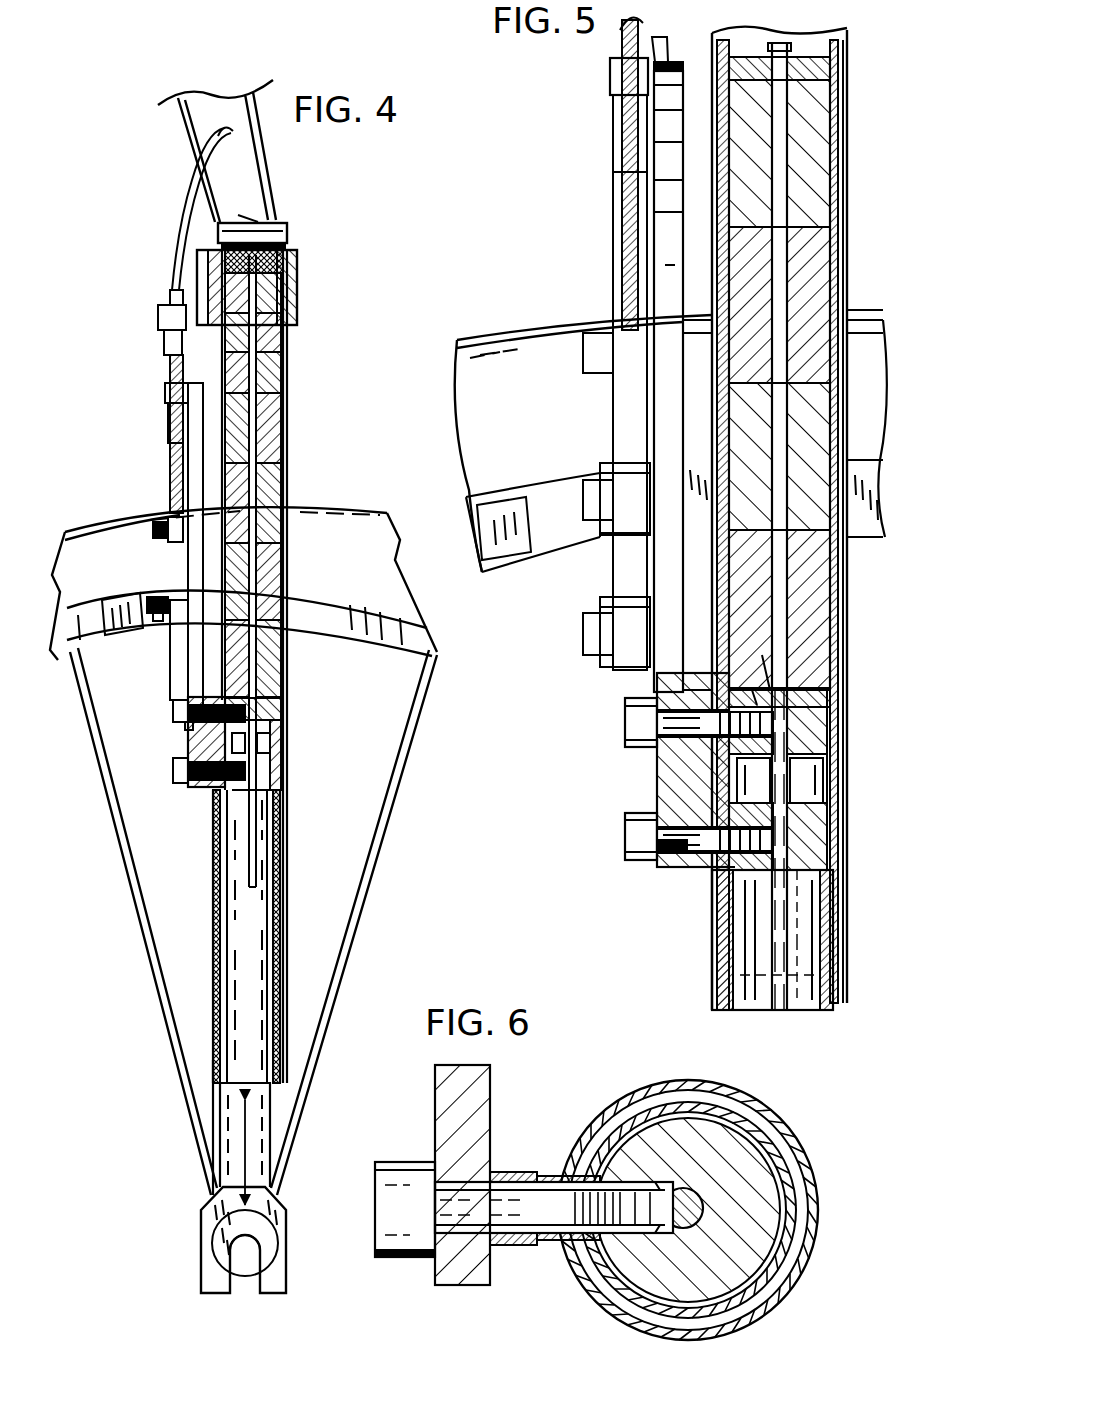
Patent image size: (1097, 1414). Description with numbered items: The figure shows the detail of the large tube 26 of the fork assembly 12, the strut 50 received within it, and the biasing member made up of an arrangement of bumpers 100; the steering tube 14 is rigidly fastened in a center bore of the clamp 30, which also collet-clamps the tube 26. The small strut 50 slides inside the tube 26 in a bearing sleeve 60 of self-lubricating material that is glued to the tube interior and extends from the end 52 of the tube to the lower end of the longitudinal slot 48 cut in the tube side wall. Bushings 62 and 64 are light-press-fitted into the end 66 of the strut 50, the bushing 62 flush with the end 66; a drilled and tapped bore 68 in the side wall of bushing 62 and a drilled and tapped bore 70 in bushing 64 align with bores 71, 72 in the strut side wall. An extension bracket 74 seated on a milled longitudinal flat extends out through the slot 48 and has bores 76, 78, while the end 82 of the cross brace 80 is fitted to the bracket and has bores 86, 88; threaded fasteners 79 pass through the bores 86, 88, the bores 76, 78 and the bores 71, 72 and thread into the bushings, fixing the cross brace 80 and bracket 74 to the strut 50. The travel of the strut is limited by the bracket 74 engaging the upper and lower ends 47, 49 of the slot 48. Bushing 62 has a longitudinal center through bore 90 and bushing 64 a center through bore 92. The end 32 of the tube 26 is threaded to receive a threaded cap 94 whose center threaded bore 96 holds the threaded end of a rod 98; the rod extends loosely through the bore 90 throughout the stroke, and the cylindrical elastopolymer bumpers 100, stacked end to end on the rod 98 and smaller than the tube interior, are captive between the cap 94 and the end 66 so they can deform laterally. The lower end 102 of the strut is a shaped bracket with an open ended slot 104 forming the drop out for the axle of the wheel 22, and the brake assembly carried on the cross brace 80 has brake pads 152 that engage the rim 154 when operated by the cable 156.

In FIG. 4, the fork assembly 12 is at (133, 228).
In FIG. 4, the steering tube 14 is at (180, 142).
In FIG. 4, the wheel 22 is at (88, 532).
In FIG. 5, the wheel 22 is at (505, 338).
In FIG. 4, the large tube 26 is at (283, 900).
In FIG. 5, the large tube 26 is at (843, 915).
In FIG. 6, the large tube 26 is at (773, 1117).
In FIG. 4, the clamp 30 is at (297, 300).
In FIG. 4, the end of the tube 32 is at (287, 243).
In FIG. 5, the upper end of the slot 47 is at (717, 581).
In FIG. 4, the longitudinal slot 48 is at (215, 797).
In FIG. 5, the longitudinal slot 48 is at (715, 898).
In FIG. 6, the longitudinal slot 48 is at (553, 1248).
In FIG. 4, the lower end of the slot 49 is at (217, 833).
In FIG. 5, the lower end of the slot 49 is at (715, 955).
In FIG. 4, the strut 50 is at (272, 1110).
In FIG. 5, the strut 50 is at (728, 923).
In FIG. 6, the strut 50 is at (757, 1275).
In FIG. 4, the end of the tube 52 is at (213, 1068).
In FIG. 4, the bearing sleeve 60 is at (280, 960).
In FIG. 5, the bearing sleeve 60 is at (840, 985).
In FIG. 6, the bearing sleeve 60 is at (797, 1192).
In FIG. 4, the bushing 62 is at (281, 714).
In FIG. 5, the bushing 62 is at (818, 722).
In FIG. 6, the bushing 62 is at (688, 1135).
In FIG. 4, the bushing 64 is at (281, 768).
In FIG. 5, the bushing 64 is at (822, 830).
In FIG. 4, the end of the strut 66 is at (281, 676).
In FIG. 5, the end of the strut 66 is at (826, 641).
In FIG. 5, the drilled and tapped bore 68 is at (790, 722).
In FIG. 5, the drilled and tapped bore 70 is at (797, 836).
In FIG. 5, the bore 71 is at (762, 660).
In FIG. 5, the bore 72 is at (715, 874).
In FIG. 4, the extension bracket 74 is at (205, 752).
In FIG. 5, the extension bracket 74 is at (697, 783).
In FIG. 6, the extension bracket 74 is at (516, 1172).
In FIG. 5, the bore 76 is at (690, 729).
In FIG. 5, the bore 78 is at (682, 848).
In FIG. 4, the threaded fasteners 79 is at (173, 711).
In FIG. 5, the threaded fasteners 79 is at (626, 705).
In FIG. 6, the threaded fasteners 79 is at (385, 1210).
In FIG. 4, the cross brace 80 is at (186, 465).
In FIG. 5, the cross brace 80 is at (665, 218).
In FIG. 6, the cross brace 80 is at (467, 1286).
In FIG. 4, the end of the cross brace 82 is at (196, 784).
In FIG. 5, the end of the cross brace 82 is at (710, 868).
In FIG. 5, the bore 86 is at (668, 715).
In FIG. 5, the bore 88 is at (707, 828).
In FIG. 5, the center through bore 90 is at (790, 650).
In FIG. 6, the center through bore 90 is at (696, 1212).
In FIG. 5, the center through bore 92 is at (795, 858).
In FIG. 4, the threaded cap 94 is at (257, 222).
In FIG. 4, the center threaded bore 96 is at (287, 271).
In FIG. 4, the rod 98 is at (256, 815).
In FIG. 5, the rod 98 is at (780, 1012).
In FIG. 6, the rod 98 is at (692, 1220).
In FIG. 4, the bumpers 100 is at (276, 420).
In FIG. 5, the bumpers 100 is at (820, 267).
In FIG. 4, the end of the strut 102 is at (201, 1242).
In FIG. 4, the open ended slot 104 is at (244, 1290).
In FIG. 4, the brake pads 152 is at (117, 617).
In FIG. 5, the brake pads 152 is at (518, 502).
In FIG. 4, the rim 154 is at (70, 645).
In FIG. 5, the rim 154 is at (520, 568).
In FIG. 4, the cable 156 is at (176, 250).
In FIG. 5, the cable 156 is at (620, 33).